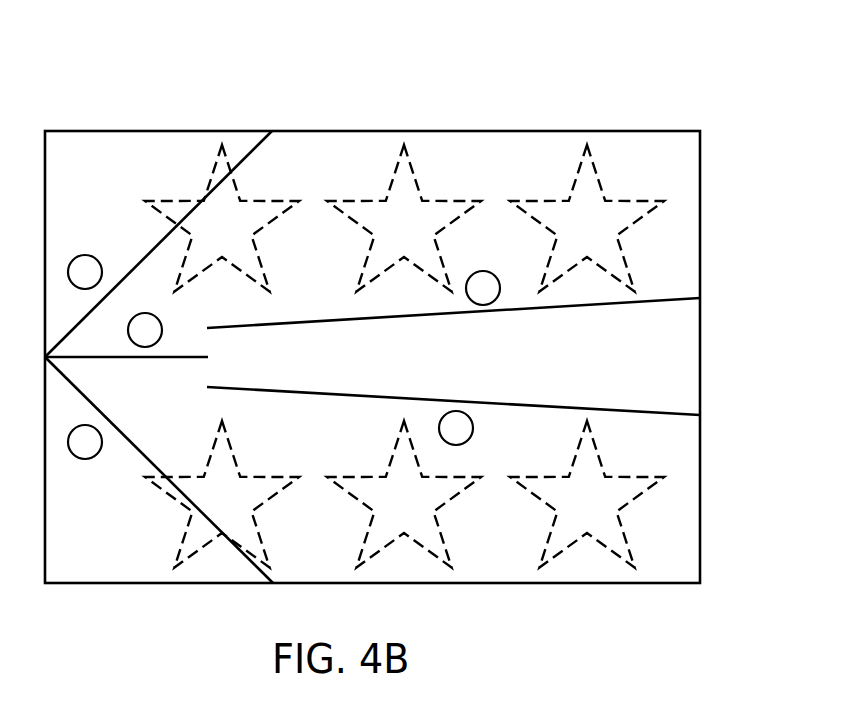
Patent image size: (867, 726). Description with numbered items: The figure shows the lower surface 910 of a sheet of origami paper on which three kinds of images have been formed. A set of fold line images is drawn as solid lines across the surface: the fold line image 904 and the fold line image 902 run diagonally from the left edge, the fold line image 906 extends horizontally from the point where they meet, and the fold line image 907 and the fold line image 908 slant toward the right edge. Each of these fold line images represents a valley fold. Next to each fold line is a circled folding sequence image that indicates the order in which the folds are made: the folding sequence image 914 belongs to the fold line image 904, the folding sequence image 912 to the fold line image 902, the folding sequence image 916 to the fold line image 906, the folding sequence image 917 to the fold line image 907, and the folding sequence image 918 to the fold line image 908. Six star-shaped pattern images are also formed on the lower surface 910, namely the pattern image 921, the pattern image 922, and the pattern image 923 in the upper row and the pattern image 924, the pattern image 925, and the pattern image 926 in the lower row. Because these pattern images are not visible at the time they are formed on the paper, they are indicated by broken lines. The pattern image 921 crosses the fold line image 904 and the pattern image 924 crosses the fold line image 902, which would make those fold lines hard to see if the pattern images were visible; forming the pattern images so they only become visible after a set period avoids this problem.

The lower surface of the origami paper 910 is at (647, 107).
The fold line image 904 is at (263, 142).
The fold line image 902 is at (115, 425).
The fold line image 906 is at (168, 357).
The fold line image 907 is at (660, 298).
The fold line image 908 is at (665, 413).
The folding sequence image 914 is at (92, 255).
The folding sequence image 916 is at (162, 325).
The folding sequence image 912 is at (95, 460).
The folding sequence image 917 is at (505, 253).
The folding sequence image 918 is at (473, 428).
The pattern image 921 is at (263, 268).
The pattern image 922 is at (412, 170).
The pattern image 923 is at (595, 170).
The pattern image 924 is at (280, 492).
The pattern image 925 is at (462, 492).
The pattern image 926 is at (645, 492).